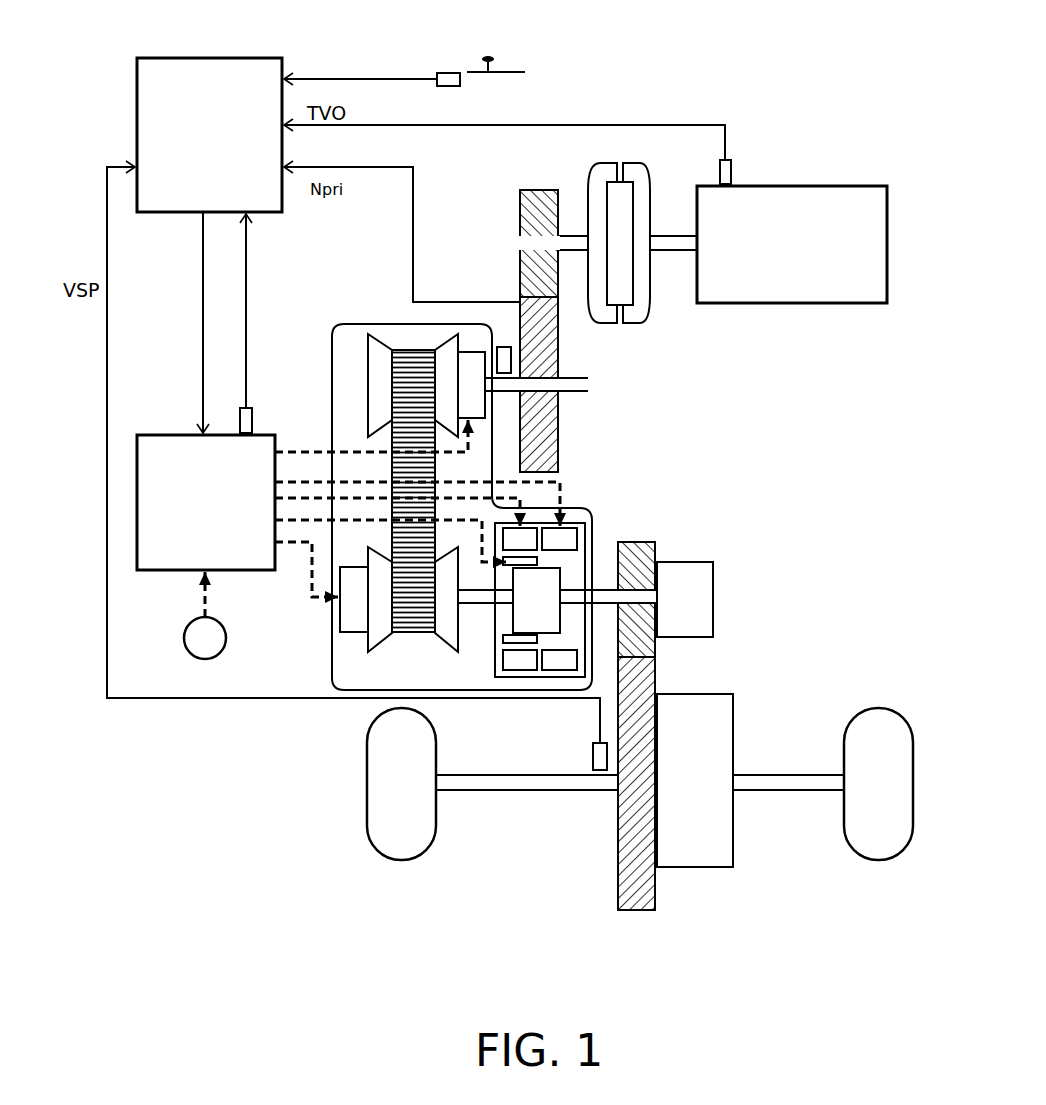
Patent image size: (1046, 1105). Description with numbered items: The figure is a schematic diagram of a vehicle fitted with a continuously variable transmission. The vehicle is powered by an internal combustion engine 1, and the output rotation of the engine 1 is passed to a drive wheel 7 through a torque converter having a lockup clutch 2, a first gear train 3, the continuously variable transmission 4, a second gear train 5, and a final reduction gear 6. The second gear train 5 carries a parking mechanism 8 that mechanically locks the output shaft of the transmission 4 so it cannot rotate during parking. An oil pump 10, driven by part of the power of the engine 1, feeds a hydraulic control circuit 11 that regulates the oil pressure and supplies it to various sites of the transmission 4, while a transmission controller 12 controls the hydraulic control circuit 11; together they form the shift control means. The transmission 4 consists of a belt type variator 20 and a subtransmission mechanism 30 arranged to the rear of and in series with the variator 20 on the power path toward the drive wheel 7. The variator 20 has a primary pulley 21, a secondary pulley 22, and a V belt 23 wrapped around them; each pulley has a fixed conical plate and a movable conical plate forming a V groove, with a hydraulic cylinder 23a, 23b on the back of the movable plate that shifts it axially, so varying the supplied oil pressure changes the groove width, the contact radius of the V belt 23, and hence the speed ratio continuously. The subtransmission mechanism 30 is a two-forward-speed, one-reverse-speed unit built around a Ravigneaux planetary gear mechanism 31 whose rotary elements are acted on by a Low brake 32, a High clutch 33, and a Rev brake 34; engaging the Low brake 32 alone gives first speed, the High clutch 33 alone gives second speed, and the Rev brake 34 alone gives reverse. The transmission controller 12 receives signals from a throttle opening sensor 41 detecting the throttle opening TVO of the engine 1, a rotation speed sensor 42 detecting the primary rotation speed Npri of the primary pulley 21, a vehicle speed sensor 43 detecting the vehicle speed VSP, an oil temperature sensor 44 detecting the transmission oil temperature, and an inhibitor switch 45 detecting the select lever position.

The engine 1 is at (872, 197).
The torque converter having a lockup clutch 2 is at (641, 200).
The first gear train 3 is at (541, 182).
The transmission 4 is at (383, 457).
The second gear train 5 is at (640, 923).
The final reduction gear 6 is at (693, 855).
The drive wheel 7 is at (402, 843).
The parking mechanism 8 is at (712, 590).
The oil pump 10 is at (190, 628).
The hydraulic control circuit 11 is at (157, 440).
The transmission controller 12 is at (268, 72).
The variator 20 is at (353, 352).
The primary pulley 21 is at (382, 385).
The secondary pulley 22 is at (382, 616).
The V belt 23 is at (416, 350).
The hydraulic cylinder 23a is at (470, 367).
The hydraulic cylinder 23b is at (348, 606).
The subtransmission mechanism 30 is at (568, 565).
The Ravigneaux planetary gear mechanism 31 is at (538, 595).
The Low brake 32 is at (522, 542).
The High clutch 33 is at (512, 639).
The Rev brake 34 is at (558, 542).
The throttle opening sensor 41 is at (731, 166).
The rotation speed sensor 42 is at (505, 357).
The vehicle speed sensor 43 is at (598, 757).
The oil temperature sensor 44 is at (251, 419).
The inhibitor switch 45 is at (445, 75).